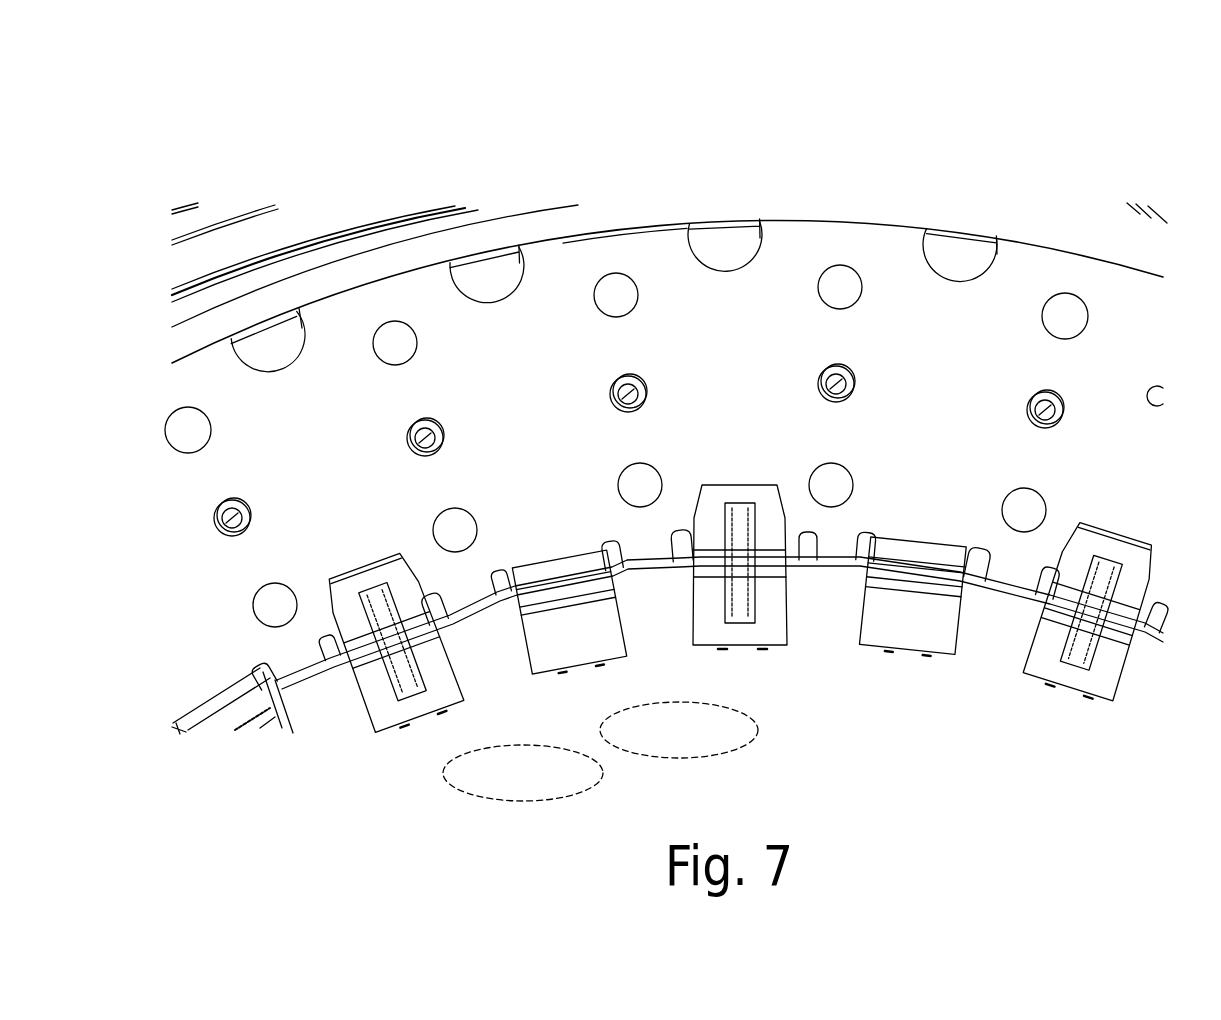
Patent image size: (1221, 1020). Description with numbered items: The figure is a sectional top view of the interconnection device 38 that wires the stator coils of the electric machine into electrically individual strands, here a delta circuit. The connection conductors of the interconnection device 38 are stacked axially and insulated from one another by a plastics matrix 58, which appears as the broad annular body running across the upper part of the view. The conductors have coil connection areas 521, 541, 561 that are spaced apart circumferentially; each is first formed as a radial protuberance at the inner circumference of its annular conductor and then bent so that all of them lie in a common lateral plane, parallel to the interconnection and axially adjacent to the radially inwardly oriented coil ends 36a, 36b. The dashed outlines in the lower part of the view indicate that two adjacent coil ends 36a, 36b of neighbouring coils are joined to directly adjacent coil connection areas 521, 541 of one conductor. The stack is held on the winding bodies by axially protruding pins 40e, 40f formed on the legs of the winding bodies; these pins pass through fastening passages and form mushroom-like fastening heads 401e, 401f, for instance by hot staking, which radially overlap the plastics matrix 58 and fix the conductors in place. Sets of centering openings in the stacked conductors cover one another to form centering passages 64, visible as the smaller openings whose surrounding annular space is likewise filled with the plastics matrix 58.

The interconnection device 38 is at (1075, 178).
The plastics matrix 58 is at (550, 268).
The pin 40e is at (626, 282).
The fastening head 401e is at (620, 292).
The fastening head 401f is at (649, 477).
The pin 40f is at (830, 487).
The centering passage 64 is at (420, 436).
The coil connection area 541 is at (380, 713).
The coil connection area 521 is at (535, 635).
The coil connection area 561 is at (772, 603).
The coil end 36a is at (440, 710).
The coil end 36b is at (405, 727).